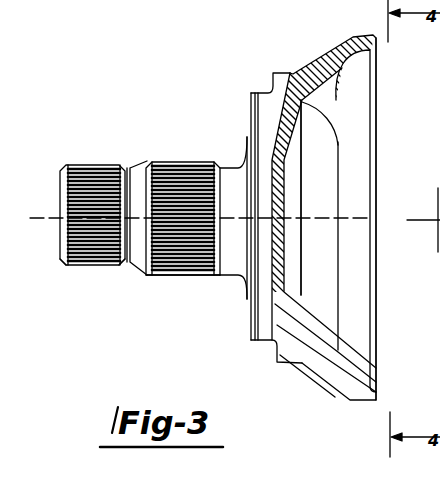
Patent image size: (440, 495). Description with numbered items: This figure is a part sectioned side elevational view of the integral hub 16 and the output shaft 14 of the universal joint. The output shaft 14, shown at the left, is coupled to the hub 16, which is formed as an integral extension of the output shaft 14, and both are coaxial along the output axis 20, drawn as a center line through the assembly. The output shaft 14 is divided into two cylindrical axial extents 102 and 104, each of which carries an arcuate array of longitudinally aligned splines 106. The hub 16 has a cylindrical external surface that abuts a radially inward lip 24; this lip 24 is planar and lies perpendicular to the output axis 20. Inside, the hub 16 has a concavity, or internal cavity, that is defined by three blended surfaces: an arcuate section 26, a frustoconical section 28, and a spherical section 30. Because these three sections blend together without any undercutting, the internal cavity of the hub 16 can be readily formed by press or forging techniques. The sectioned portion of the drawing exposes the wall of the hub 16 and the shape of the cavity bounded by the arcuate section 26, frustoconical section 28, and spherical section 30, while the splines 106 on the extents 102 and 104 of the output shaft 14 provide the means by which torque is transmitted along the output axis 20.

The output shaft 14 is at (62, 192).
The hub 16 is at (316, 64).
The output axis 20 is at (167, 277).
The radially inward lip 24 is at (375, 40).
The arcuate section 26 is at (376, 78).
The frustoconical section 28 is at (335, 126).
The spherical section 30 is at (301, 268).
The cylindrical axial extent 102 is at (103, 166).
The cylindrical axial extent 104 is at (153, 163).
The splines 106 is at (83, 267).